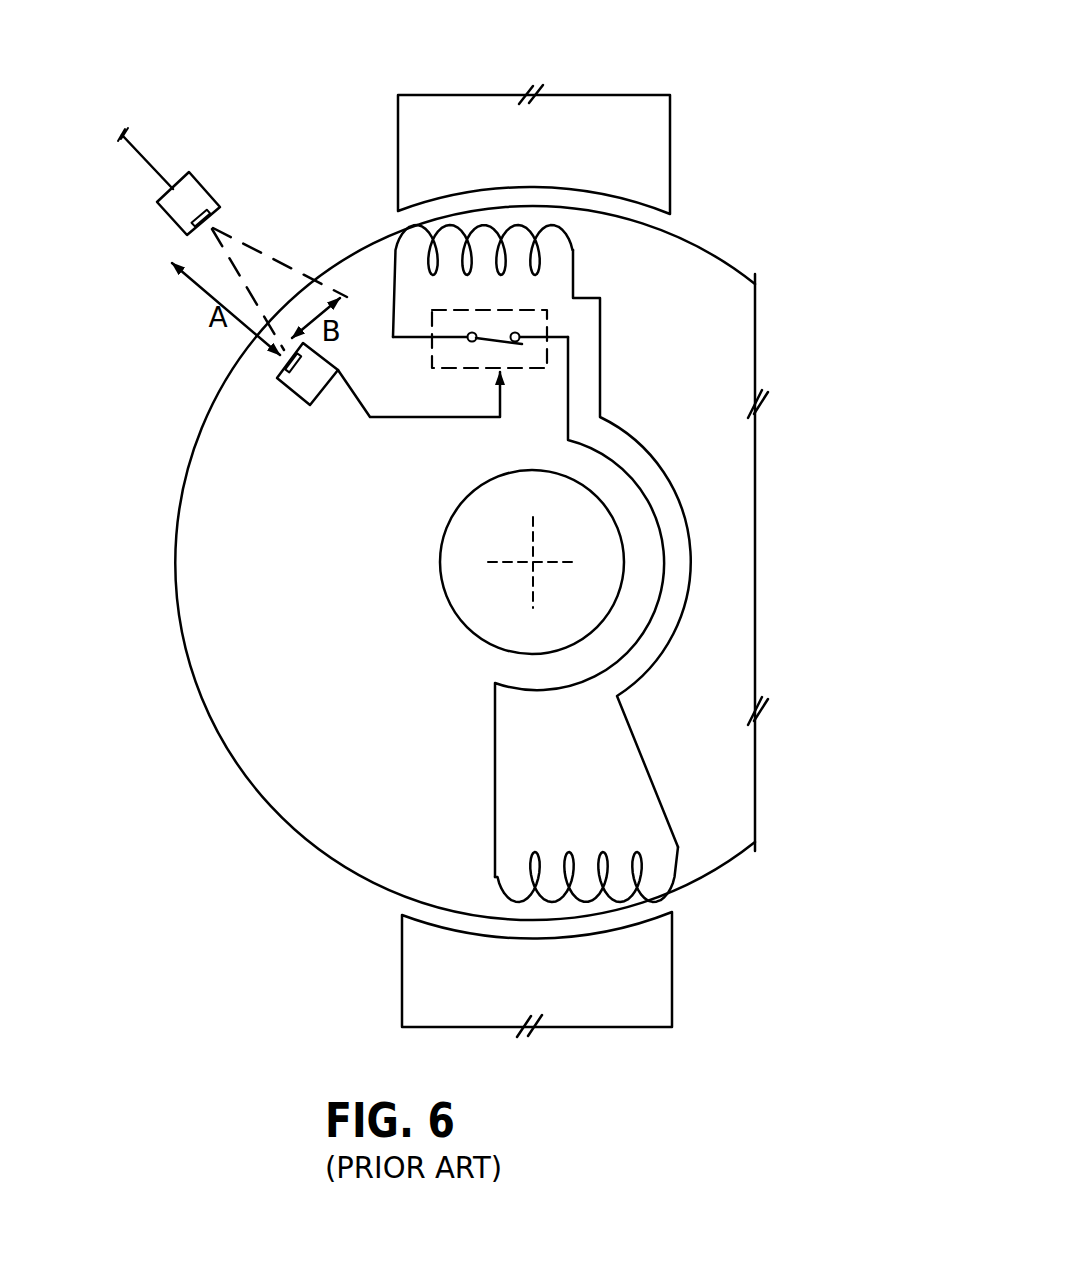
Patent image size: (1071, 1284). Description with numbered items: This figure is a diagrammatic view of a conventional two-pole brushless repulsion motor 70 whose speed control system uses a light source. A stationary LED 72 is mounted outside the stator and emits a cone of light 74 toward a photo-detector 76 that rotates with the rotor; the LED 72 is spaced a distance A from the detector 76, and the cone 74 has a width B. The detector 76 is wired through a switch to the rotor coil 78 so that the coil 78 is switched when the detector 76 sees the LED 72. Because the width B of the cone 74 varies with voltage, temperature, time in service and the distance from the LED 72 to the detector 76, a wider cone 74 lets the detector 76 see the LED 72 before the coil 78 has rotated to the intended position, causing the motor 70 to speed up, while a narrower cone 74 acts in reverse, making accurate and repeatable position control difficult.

The brushless repulsion motor 70 is at (712, 80).
The LED 72 is at (178, 212).
The cone of light 74 is at (266, 242).
The detector 76 is at (302, 392).
The coil 78 is at (543, 250).